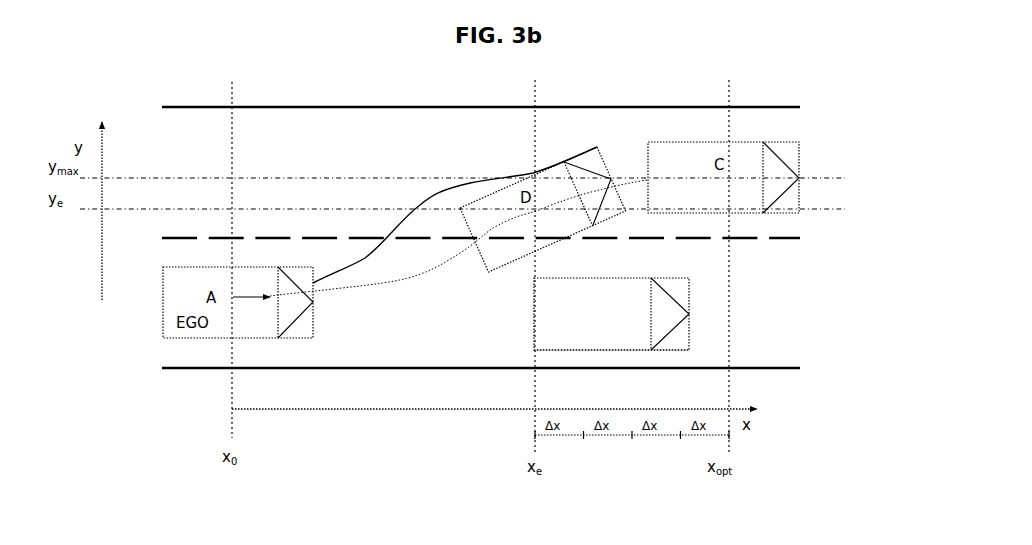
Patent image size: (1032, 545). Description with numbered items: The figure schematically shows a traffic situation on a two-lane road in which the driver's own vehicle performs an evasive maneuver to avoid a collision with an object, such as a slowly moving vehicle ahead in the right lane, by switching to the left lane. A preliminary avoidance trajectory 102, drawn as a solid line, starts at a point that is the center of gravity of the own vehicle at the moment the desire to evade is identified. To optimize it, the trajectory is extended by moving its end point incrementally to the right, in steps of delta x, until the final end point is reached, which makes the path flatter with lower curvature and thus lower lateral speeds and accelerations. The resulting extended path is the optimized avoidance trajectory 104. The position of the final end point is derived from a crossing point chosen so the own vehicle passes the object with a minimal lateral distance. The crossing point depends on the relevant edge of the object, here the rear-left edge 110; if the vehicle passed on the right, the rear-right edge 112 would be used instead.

The preliminary avoidance trajectory 102 is at (447, 185).
The optimized avoidance trajectory 104 is at (388, 289).
The rear-left edge 110 is at (531, 279).
The rear-right edge 112 is at (531, 350).